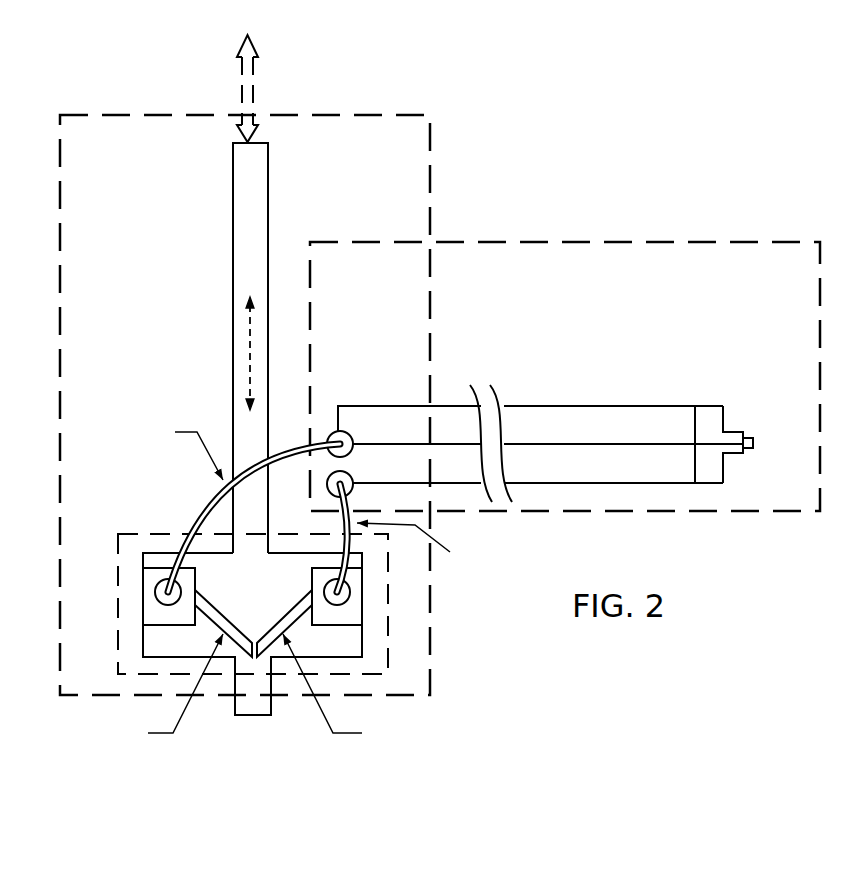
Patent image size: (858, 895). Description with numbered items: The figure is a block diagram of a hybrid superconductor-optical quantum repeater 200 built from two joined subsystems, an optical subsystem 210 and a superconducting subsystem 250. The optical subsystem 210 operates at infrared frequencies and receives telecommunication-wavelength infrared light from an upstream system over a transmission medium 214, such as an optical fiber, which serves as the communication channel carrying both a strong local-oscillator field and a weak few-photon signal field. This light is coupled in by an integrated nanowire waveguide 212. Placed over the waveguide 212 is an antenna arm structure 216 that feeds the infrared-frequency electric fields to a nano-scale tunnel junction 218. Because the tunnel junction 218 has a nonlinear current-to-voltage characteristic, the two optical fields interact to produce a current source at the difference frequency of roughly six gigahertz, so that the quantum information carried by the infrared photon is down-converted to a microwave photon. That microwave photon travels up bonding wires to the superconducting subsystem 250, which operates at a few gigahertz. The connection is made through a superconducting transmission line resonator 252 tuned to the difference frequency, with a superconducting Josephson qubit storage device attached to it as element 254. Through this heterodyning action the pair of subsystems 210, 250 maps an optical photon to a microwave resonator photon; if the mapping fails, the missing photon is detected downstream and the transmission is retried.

The hybrid superconductor-optical quantum repeater 200 is at (815, 125).
The optical subsystem 210 is at (147, 111).
The integrated nanowire waveguide 212 is at (232, 305).
The transmission medium 214 is at (253, 78).
The antenna arm structure 216 is at (149, 530).
The tunnel junction 218 is at (253, 660).
The superconducting subsystem 250 is at (632, 238).
The superconducting transmission line resonator 252 is at (580, 405).
The Josephson qubit 254 is at (745, 432).